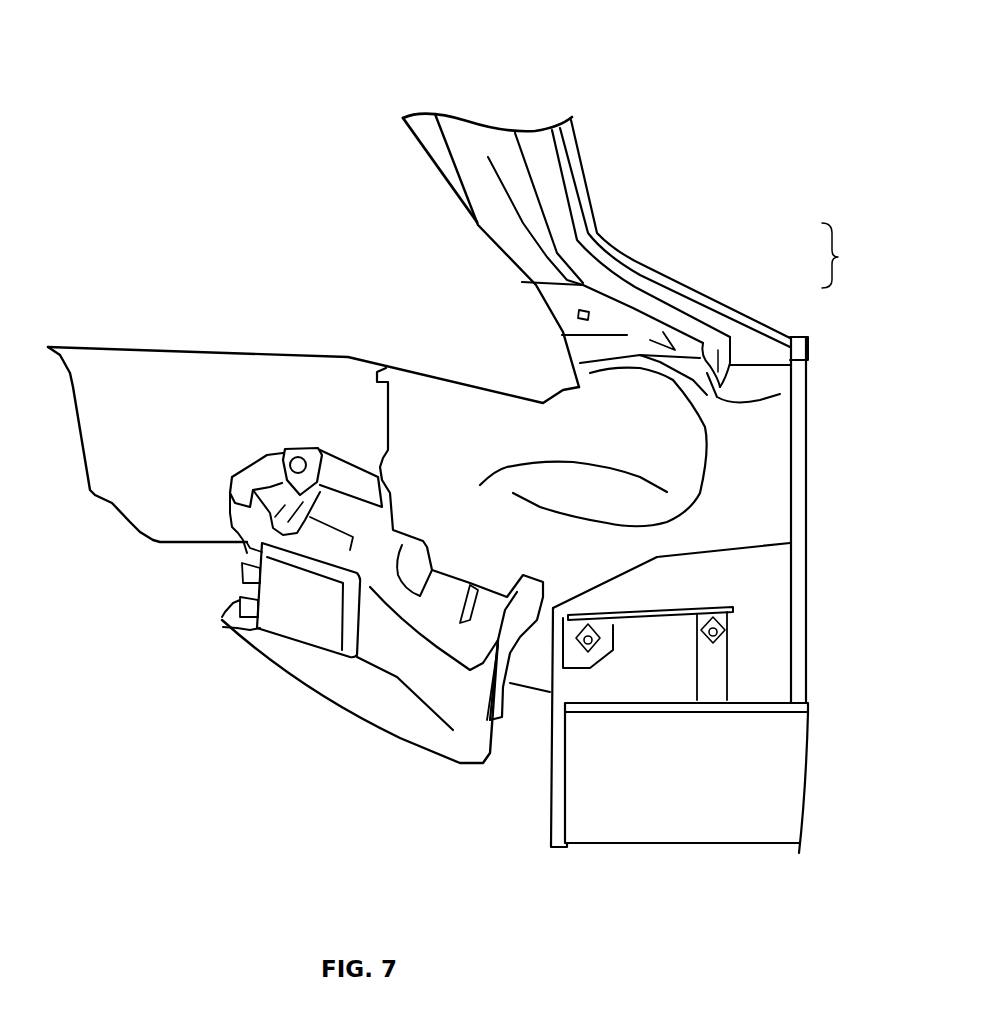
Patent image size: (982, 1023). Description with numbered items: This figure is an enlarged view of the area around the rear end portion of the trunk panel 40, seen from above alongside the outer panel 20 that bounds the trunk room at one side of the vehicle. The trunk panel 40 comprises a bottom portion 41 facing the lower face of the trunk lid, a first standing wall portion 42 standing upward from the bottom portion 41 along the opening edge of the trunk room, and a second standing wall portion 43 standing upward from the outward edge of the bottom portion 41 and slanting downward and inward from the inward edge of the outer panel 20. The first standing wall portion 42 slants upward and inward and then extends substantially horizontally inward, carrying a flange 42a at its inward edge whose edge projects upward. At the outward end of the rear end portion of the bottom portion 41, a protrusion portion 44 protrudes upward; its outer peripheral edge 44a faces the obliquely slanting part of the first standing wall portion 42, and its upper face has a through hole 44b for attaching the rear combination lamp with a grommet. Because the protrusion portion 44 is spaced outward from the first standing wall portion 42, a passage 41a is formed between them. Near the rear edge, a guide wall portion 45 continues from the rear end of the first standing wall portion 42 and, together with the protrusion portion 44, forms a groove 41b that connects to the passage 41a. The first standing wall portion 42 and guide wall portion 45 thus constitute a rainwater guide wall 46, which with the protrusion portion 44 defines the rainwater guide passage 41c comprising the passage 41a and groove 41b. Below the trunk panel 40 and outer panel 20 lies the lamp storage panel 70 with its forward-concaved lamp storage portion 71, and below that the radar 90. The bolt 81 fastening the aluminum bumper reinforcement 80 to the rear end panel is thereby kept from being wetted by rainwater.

The outer panel 20 is at (343, 148).
The trunk panel 40 is at (510, 148).
The bottom portion 41 is at (472, 148).
The passage 41a is at (680, 287).
The groove 41b is at (713, 372).
The rainwater guide passage 41c is at (853, 255).
The first standing wall portion 42 is at (545, 147).
The flange 42a is at (580, 168).
The second standing wall portion 43 is at (433, 143).
The protrusion portion 44 is at (565, 307).
The outer peripheral edge 44a is at (533, 285).
The through hole 44b is at (565, 330).
The guide wall portion 45 is at (777, 360).
The rainwater guide wall 46 is at (597, 280).
The lamp storage panel 70 is at (767, 467).
The lamp storage portion 71 is at (614, 447).
The bumper reinforcement 80 is at (687, 823).
The bolt 81 is at (590, 627).
The radar 90 is at (300, 627).